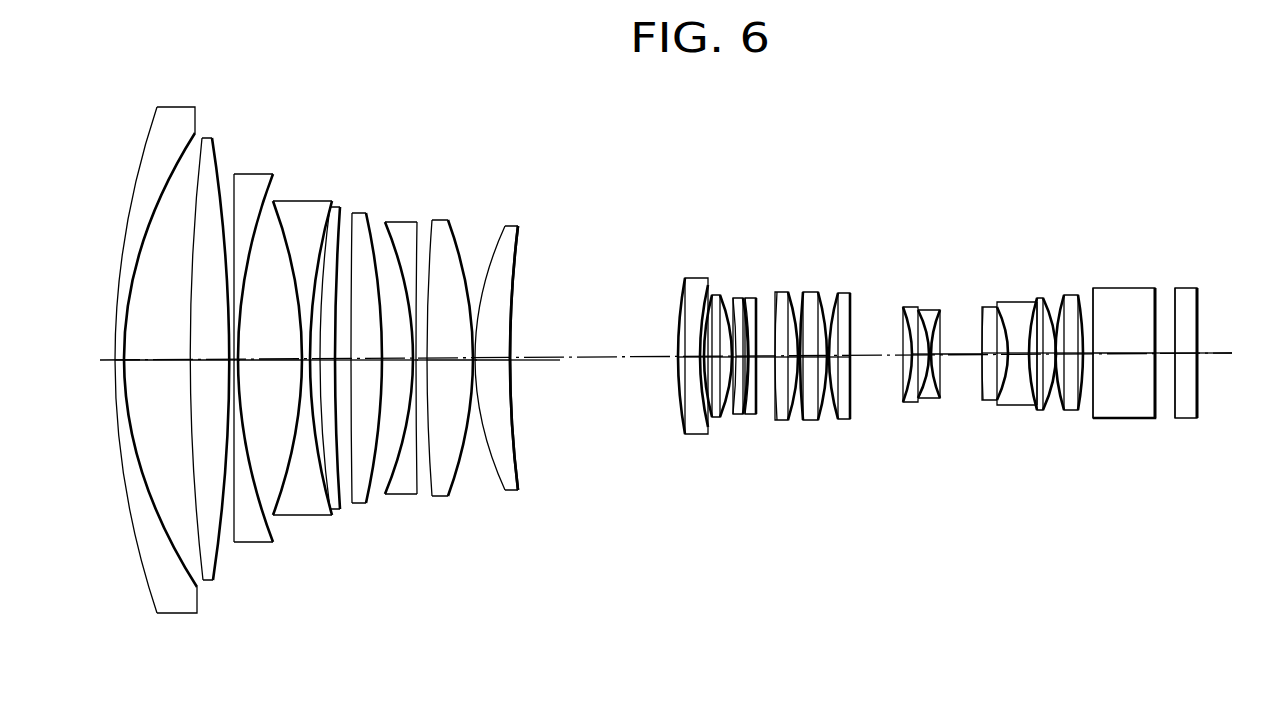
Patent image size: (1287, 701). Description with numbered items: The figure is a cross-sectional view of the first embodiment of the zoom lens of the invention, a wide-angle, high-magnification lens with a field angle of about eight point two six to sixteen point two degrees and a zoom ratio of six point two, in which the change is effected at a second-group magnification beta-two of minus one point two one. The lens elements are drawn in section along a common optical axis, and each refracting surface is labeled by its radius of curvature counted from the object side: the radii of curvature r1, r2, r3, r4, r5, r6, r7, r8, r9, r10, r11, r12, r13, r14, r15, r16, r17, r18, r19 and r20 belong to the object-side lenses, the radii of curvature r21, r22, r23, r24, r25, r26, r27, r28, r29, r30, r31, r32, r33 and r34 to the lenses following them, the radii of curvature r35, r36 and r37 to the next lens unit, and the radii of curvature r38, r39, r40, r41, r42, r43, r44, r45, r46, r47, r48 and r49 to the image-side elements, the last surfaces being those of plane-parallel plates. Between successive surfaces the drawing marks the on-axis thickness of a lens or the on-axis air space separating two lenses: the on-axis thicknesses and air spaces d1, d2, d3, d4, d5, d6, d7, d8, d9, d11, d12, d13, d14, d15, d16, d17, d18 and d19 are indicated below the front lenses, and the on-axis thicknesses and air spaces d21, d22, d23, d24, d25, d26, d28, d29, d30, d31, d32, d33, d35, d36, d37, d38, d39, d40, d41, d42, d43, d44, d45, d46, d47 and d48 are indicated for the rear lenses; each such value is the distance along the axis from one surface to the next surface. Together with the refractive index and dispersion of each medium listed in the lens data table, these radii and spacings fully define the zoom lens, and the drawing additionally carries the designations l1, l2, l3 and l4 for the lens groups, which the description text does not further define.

The radius of curvature of the first surface r1 is at (145, 128).
The radius of curvature of the second surface r2 is at (184, 148).
The radius of curvature of the third surface r3 is at (203, 138).
The radius of curvature of the fourth surface r4 is at (216, 139).
The radius of curvature of the fifth surface r5 is at (234, 174).
The radius of curvature of the sixth surface r6 is at (266, 205).
The radius of curvature of the seventh surface r7 is at (280, 225).
The radius of curvature of the eighth surface r8 is at (325, 225).
The radius of curvature of the ninth surface r9 is at (330, 207).
The radius of curvature of the tenth surface r10 is at (340, 207).
The radius of curvature of the eleventh surface r11 is at (352, 214).
The radius of curvature of the twelfth surface r12 is at (366, 214).
The radius of curvature of the thirteenth surface r13 is at (386, 222).
The radius of curvature of the fourteenth surface r14 is at (417, 222).
The radius of curvature of the fifteenth surface r15 is at (432, 220).
The radius of curvature of the sixteenth surface r16 is at (452, 232).
The radius of curvature of the seventeenth surface r17 is at (500, 240).
The radius of curvature of the eighteenth surface r18 is at (505, 227).
The radius of curvature of the nineteenth surface r19 is at (518, 227).
The radius of curvature of the twentieth surface r20 is at (520, 250).
The radius of curvature of the twenty-first surface r21 is at (679, 344).
The radius of curvature of the twenty-second surface r22 is at (686, 332).
The radius of curvature of the twenty-third surface r23 is at (706, 320).
The radius of curvature of the twenty-fourth surface r24 is at (712, 300).
The radius of curvature of the twenty-fifth surface r25 is at (734, 297).
The radius of curvature of the twenty-sixth surface r26 is at (744, 298).
The radius of curvature of the twenty-seventh surface r27 is at (748, 297).
The radius of curvature of the twenty-eighth surface r28 is at (756, 298).
The radius of curvature of the twenty-ninth surface r29 is at (777, 292).
The radius of curvature of the thirtieth surface r30 is at (790, 294).
The radius of curvature of the thirty-first surface r31 is at (803, 292).
The radius of curvature of the thirty-second surface r32 is at (820, 294).
The radius of curvature of the thirty-third surface r33 is at (837, 294).
The radius of curvature of the thirty-fourth surface r34 is at (850, 293).
The radius of curvature of the thirty-fifth surface r35 is at (904, 307).
The radius of curvature of the thirty-sixth surface r36 is at (920, 311).
The radius of curvature of the thirty-seventh surface r37 is at (938, 311).
The radius of curvature of the thirty-eighth surface r38 is at (983, 307).
The radius of curvature of the thirty-ninth surface r39 is at (998, 308).
The radius of curvature of the fortieth surface r40 is at (1036, 302).
The radius of curvature of the forty-first surface r41 is at (1038, 298).
The radius of curvature of the forty-second surface r42 is at (1044, 300).
The radius of curvature of the forty-third surface r43 is at (1064, 295).
The radius of curvature of the forty-fourth surface r44 is at (1078, 295).
The radius of curvature of the forty-fifth surface r45 is at (1093, 288).
The radius of curvature of the forty-sixth surface r46 is at (1155, 288).
The radius of curvature of the forty-seventh surface r47 is at (1175, 288).
The radius of curvature of the forty-eighth surface r48 is at (1197, 288).
The radius of curvature of the forty-ninth surface r49 is at (1200, 295).
The on-axis thickness or air space after the first surface d1 is at (117, 372).
The on-axis thickness or air space after the second surface d2 is at (165, 372).
The on-axis thickness or air space after the third surface d3 is at (210, 368).
The on-axis thickness or air space after the fourth surface d4 is at (232, 368).
The on-axis thickness or air space after the fifth surface d5 is at (237, 368).
The on-axis thickness or air space after the sixth surface d6 is at (270, 368).
The on-axis thickness or air space after the seventh surface d7 is at (306, 368).
The on-axis thickness or air space after the eighth surface d8 is at (315, 368).
The on-axis thickness or air space after the ninth surface d9 is at (327, 368).
The on-axis thickness or air space after the eleventh surface d11 is at (366, 368).
The on-axis thickness or air space after the twelfth surface d12 is at (398, 368).
The on-axis thickness or air space after the thirteenth surface d13 is at (415, 368).
The on-axis thickness or air space after the fourteenth surface d14 is at (422, 368).
The on-axis thickness or air space after the fifteenth surface d15 is at (450, 368).
The on-axis thickness or air space after the sixteenth surface d16 is at (474, 368).
The on-axis thickness or air space after the seventeenth surface d17 is at (492, 368).
The on-axis thickness or air space after the eighteenth surface d18 is at (515, 368).
The on-axis thickness or air space after the nineteenth surface d19 is at (530, 368).
The on-axis thickness or air space after the twenty-first surface d21 is at (690, 365).
The on-axis thickness or air space after the twenty-second surface d22 is at (702, 365).
The on-axis thickness or air space after the twenty-third surface d23 is at (718, 365).
The on-axis thickness or air space after the twenty-fourth surface d24 is at (734, 365).
The on-axis thickness or air space after the twenty-fifth surface d25 is at (742, 365).
The on-axis thickness or air space after the twenty-sixth surface d26 is at (751, 363).
The on-axis thickness or air space after the twenty-eighth surface d28 is at (765, 363).
The on-axis thickness or air space after the twenty-ninth surface d29 is at (787, 363).
The on-axis thickness or air space after the thirtieth surface d30 is at (799, 363).
The on-axis thickness or air space after the thirty-first surface d31 is at (813, 363).
The on-axis thickness or air space after the thirty-second surface d32 is at (828, 363).
The on-axis thickness or air space after the thirty-third surface d33 is at (840, 363).
The on-axis thickness or air space after the thirty-fifth surface d35 is at (915, 363).
The on-axis thickness or air space after the thirty-sixth surface d36 is at (930, 363).
The on-axis thickness or air space after the thirty-seventh surface d37 is at (960, 363).
The on-axis thickness or air space after the thirty-eighth surface d38 is at (995, 363).
The on-axis thickness or air space after the thirty-ninth surface d39 is at (1018, 363).
The on-axis thickness or air space after the fortieth surface d40 is at (1042, 363).
The on-axis thickness or air space after the forty-first surface d41 is at (1055, 363).
The on-axis thickness or air space after the forty-second surface d42 is at (1070, 363).
The on-axis thickness or air space after the forty-third surface d43 is at (1088, 363).
The on-axis thickness or air space after the forty-fourth surface d44 is at (1124, 363).
The on-axis thickness or air space after the forty-fifth surface d45 is at (1165, 360).
The on-axis thickness or air space after the forty-sixth surface d46 is at (1186, 360).
The on-axis thickness or air space after the forty-seventh surface d47 is at (1205, 360).
The on-axis thickness or air space after the forty-eighth surface d48 is at (1215, 360).
The first lens group l1 is at (343, 368).
The second lens group l2 is at (545, 366).
The third lens group l3 is at (760, 365).
The fourth lens group l4 is at (880, 365).